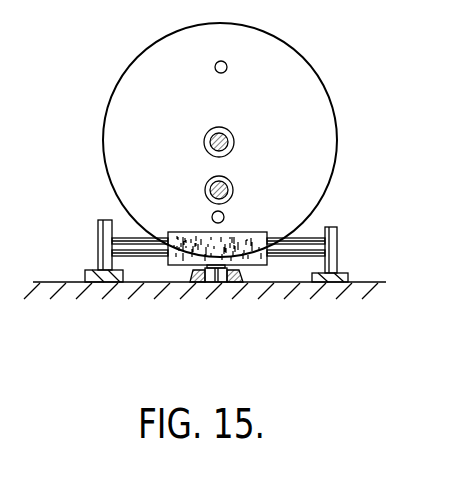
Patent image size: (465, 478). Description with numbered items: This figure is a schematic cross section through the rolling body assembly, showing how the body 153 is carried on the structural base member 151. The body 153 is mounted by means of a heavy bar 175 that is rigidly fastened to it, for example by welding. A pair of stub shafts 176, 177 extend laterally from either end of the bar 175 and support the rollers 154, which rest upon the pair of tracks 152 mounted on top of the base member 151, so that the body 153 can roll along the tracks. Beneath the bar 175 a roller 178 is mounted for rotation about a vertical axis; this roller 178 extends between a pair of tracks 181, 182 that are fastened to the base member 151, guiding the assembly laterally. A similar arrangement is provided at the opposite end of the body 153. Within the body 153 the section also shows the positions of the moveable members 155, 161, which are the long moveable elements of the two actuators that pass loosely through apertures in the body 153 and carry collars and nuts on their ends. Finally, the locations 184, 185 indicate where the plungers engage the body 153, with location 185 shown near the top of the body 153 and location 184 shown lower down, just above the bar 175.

The structural base member 151 is at (64, 285).
The tracks 152 is at (92, 270).
The body 153 is at (318, 76).
The rollers 154 is at (96, 247).
The moveable element 155 is at (227, 131).
The moveable element 161 is at (226, 184).
The heavy bar 175 is at (233, 230).
The stub shaft 176 is at (122, 235).
The stub shaft 177 is at (313, 236).
The roller 178 is at (214, 283).
The track 181 is at (186, 284).
The track 182 is at (234, 283).
The location 184 is at (212, 215).
The location 185 is at (224, 62).